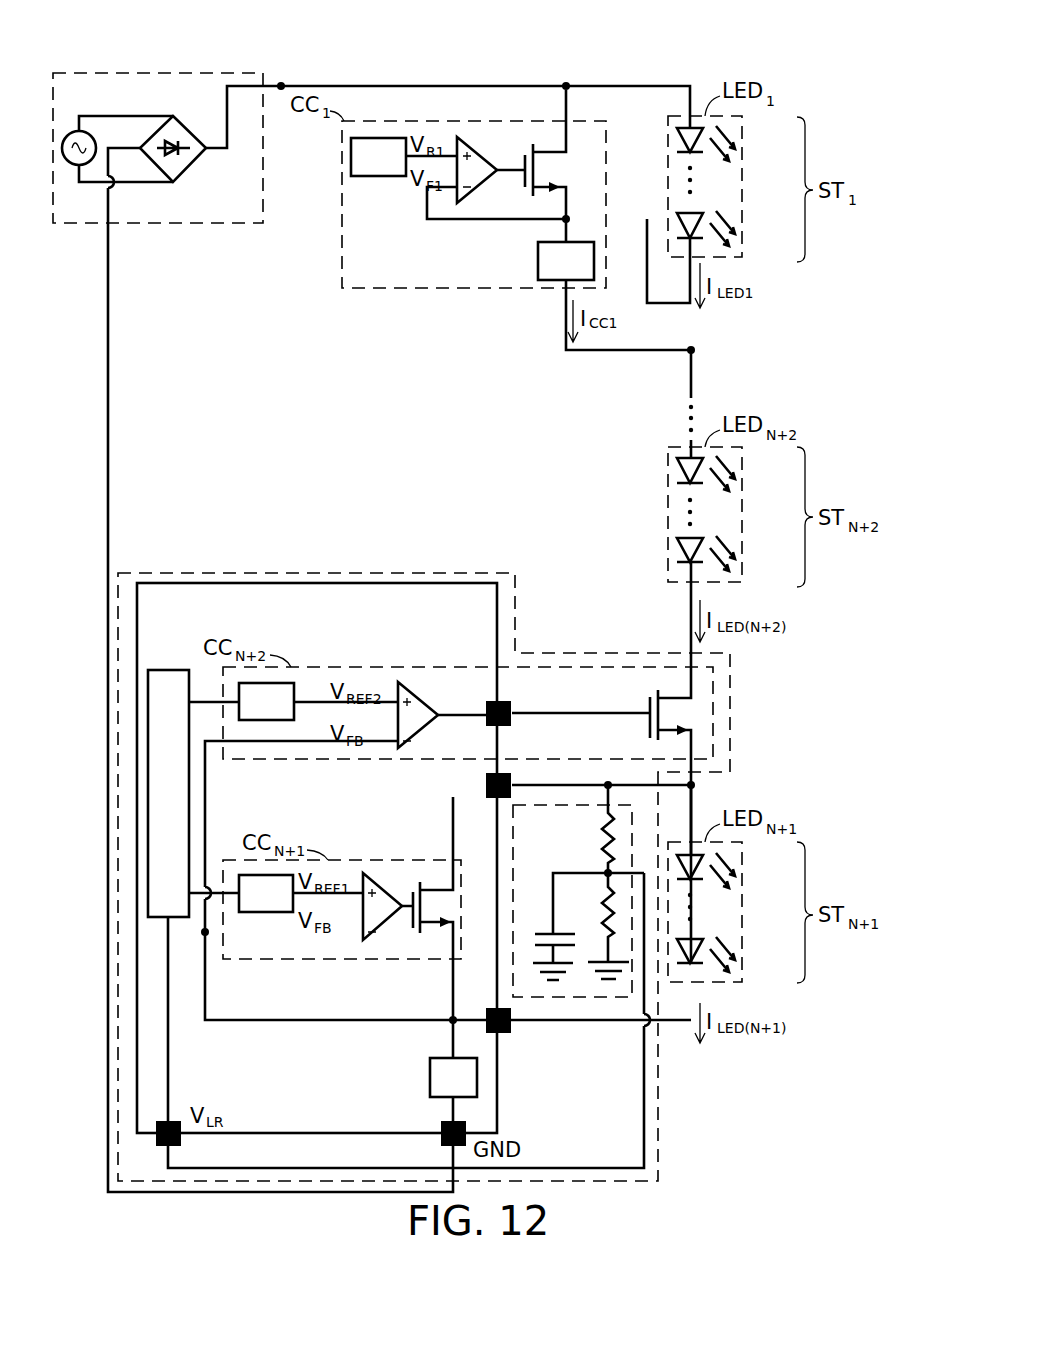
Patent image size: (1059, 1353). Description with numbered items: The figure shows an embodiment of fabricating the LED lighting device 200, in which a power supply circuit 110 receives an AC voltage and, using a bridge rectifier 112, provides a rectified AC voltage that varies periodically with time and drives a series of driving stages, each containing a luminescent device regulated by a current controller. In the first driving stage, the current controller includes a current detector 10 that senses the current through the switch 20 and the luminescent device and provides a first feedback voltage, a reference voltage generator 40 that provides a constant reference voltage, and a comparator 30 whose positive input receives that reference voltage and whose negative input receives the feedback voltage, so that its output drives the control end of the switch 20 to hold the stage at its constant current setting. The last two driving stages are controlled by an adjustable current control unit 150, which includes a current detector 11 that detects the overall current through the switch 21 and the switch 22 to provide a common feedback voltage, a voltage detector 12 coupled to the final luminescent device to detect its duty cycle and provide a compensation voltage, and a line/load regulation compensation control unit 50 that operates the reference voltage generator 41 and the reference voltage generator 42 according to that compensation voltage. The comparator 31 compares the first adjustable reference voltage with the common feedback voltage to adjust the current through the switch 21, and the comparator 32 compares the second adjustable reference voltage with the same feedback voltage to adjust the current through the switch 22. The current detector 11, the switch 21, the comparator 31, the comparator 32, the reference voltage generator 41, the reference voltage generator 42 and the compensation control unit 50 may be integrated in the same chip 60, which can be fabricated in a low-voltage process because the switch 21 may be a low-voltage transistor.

The LED lighting device 200 is at (742, 54).
The power supply circuit 110 is at (164, 134).
The bridge rectifier 112 is at (186, 125).
The adjustable current control unit 150 is at (273, 573).
The chip 60 is at (412, 583).
The line/load regulation compensation control unit 50 is at (182, 801).
The reference voltage generator 40 is at (391, 170).
The reference voltage generator 41 is at (279, 906).
The reference voltage generator 42 is at (280, 714).
The comparator 30 is at (471, 150).
The comparator 31 is at (377, 890).
The comparator 32 is at (416, 698).
The switch 20 is at (560, 171).
The switch 21 is at (442, 912).
The switch 22 is at (685, 712).
The current detector 10 is at (579, 274).
The current detector 11 is at (465, 1091).
The voltage detector 12 is at (556, 1000).